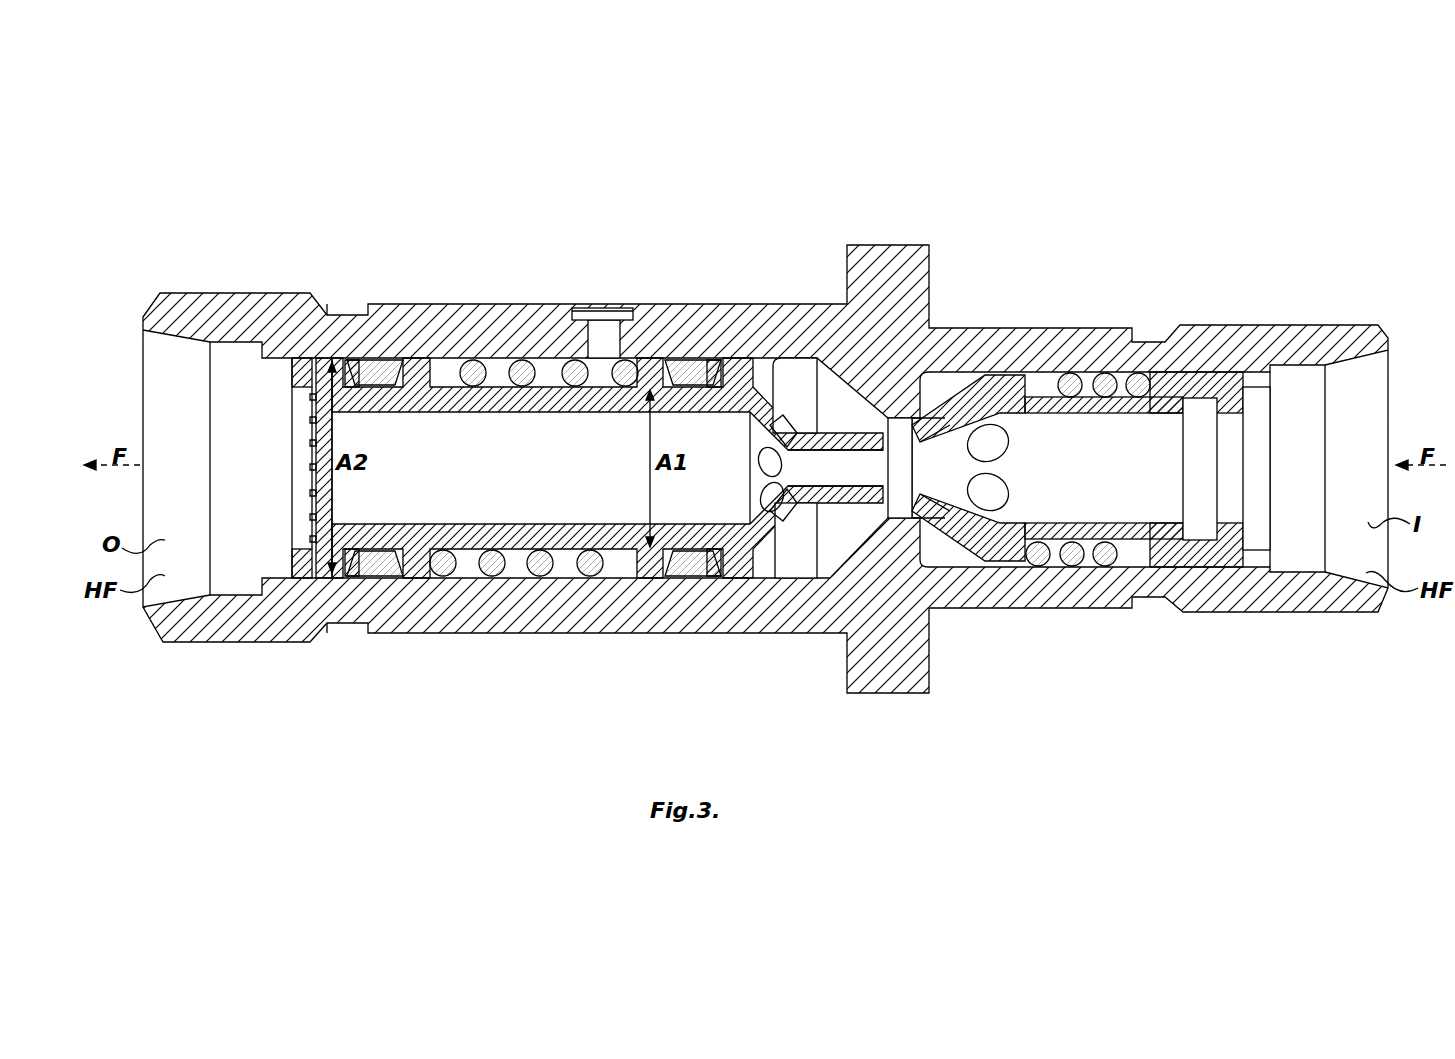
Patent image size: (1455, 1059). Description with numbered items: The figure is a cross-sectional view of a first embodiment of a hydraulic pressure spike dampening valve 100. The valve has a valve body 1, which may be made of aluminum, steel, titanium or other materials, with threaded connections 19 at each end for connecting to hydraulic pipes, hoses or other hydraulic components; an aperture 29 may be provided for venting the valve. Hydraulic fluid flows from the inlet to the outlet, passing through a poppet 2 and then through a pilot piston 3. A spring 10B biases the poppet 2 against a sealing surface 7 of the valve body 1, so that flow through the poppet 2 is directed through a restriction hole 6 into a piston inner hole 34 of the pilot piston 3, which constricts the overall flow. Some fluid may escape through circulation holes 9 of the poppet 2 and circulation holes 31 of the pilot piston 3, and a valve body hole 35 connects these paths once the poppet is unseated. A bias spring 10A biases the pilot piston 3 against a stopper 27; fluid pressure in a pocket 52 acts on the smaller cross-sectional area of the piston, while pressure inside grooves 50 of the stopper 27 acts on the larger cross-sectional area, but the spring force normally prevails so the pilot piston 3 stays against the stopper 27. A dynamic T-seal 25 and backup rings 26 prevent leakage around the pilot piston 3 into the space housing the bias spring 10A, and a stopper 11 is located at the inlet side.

The hydraulic pressure spike dampening valve 100 is at (806, 140).
The valve body 1 is at (905, 243).
The poppet 2 is at (1010, 375).
The pilot piston 3 is at (425, 375).
The restriction hole 6 is at (945, 505).
The sealing surface 7 is at (935, 520).
The circulation holes 9 is at (1000, 495).
The bias spring 10A is at (540, 562).
The spring 10B is at (1080, 556).
The stopper 11 is at (1238, 367).
The threaded connections 19 is at (207, 633).
The dynamic T-seal 25 is at (385, 362).
The backup rings 26 is at (352, 360).
The stopper 27 is at (302, 582).
The aperture 29 is at (606, 312).
The circulation holes 31 is at (768, 482).
The piston inner hole 34 is at (865, 482).
The valve body hole 35 is at (900, 497).
The grooves 50 is at (311, 442).
The pocket 52 is at (797, 385).